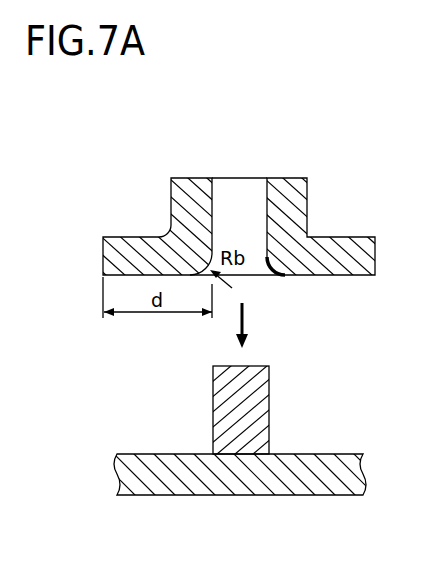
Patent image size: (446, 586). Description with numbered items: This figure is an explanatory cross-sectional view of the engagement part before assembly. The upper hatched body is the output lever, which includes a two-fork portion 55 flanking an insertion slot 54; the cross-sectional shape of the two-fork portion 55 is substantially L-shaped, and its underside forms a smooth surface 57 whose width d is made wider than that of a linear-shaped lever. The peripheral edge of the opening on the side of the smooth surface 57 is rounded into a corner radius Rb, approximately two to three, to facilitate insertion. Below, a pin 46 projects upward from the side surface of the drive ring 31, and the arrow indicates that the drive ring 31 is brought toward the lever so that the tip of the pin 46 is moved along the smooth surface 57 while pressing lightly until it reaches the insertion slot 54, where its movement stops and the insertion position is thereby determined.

The two-fork portion 55 is at (190, 183).
The insertion slot 54 is at (213, 205).
The smooth surface 57 is at (120, 278).
The pin 46 is at (269, 397).
The drive ring 31 is at (314, 485).